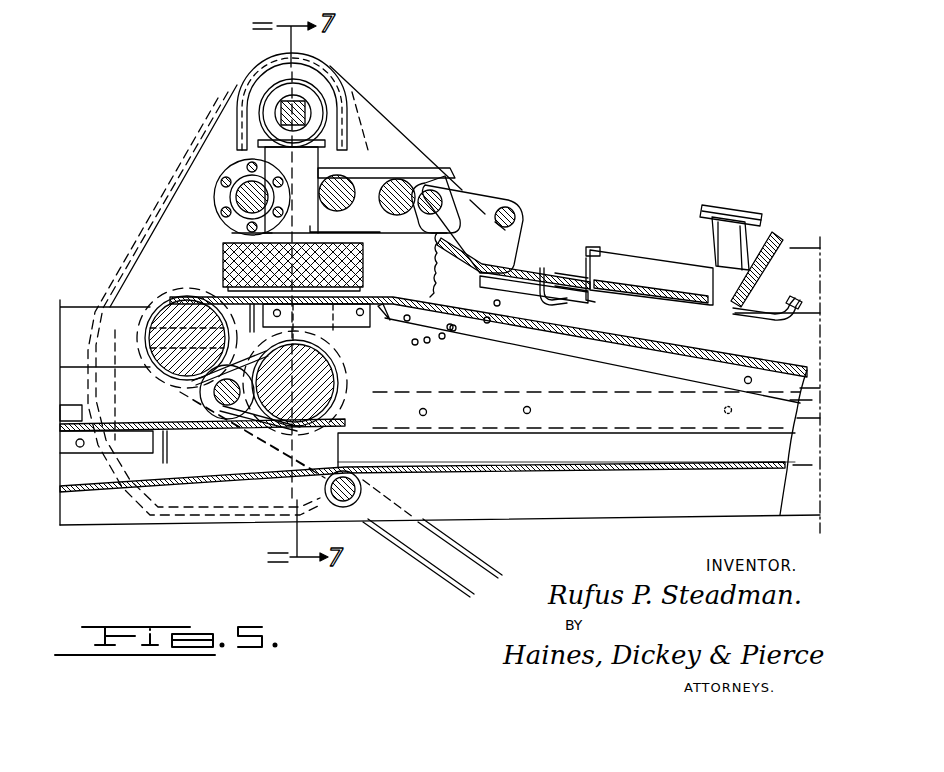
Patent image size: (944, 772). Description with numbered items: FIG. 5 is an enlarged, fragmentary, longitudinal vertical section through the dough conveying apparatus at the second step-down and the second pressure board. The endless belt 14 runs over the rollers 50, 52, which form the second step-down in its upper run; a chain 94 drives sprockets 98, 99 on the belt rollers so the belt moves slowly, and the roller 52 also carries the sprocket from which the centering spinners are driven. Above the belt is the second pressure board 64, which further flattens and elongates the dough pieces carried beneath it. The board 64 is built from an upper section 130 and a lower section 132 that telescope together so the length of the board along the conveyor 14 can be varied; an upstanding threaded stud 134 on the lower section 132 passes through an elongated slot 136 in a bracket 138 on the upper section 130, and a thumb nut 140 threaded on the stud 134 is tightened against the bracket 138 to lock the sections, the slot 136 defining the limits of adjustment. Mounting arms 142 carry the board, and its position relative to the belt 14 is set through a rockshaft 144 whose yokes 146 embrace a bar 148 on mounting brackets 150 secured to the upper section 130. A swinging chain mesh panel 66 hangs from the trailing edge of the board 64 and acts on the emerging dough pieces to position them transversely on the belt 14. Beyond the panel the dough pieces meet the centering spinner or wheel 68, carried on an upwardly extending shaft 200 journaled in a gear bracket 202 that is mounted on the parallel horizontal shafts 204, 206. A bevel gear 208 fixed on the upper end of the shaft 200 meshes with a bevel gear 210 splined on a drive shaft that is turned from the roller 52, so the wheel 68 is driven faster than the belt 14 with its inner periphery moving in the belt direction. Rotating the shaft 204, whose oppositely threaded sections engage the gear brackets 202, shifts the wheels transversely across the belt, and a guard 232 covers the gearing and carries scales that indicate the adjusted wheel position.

The endless belt 14 is at (690, 354).
The roller 50 is at (160, 308).
The roller 52 is at (336, 378).
The second pressure board 64 is at (608, 230).
The second chain mesh panel 66 is at (433, 268).
The centering wheel 68 is at (363, 256).
The chain 94 is at (463, 553).
The sprocket 98 is at (160, 290).
The sprocket 99 is at (566, 430).
The upper section 130 is at (532, 270).
The lower section 132 is at (548, 303).
The threaded stud 134 is at (755, 282).
The elongated slot 136 is at (647, 258).
The bracket 138 is at (606, 250).
The thumb nut 140 is at (747, 211).
The mounting arms 142 is at (785, 248).
The rockshaft 144 is at (428, 190).
The yokes 146 is at (436, 178).
The bar 148 is at (449, 196).
The mounting brackets 150 is at (503, 196).
The shaft 200 is at (380, 237).
The gear bracket 202 is at (318, 174).
The horizontal shaft 204 is at (250, 212).
The horizontal shaft 206 is at (392, 179).
The bevel gear 208 is at (330, 137).
The bevel gear 210 is at (305, 108).
The guard 232 is at (318, 68).